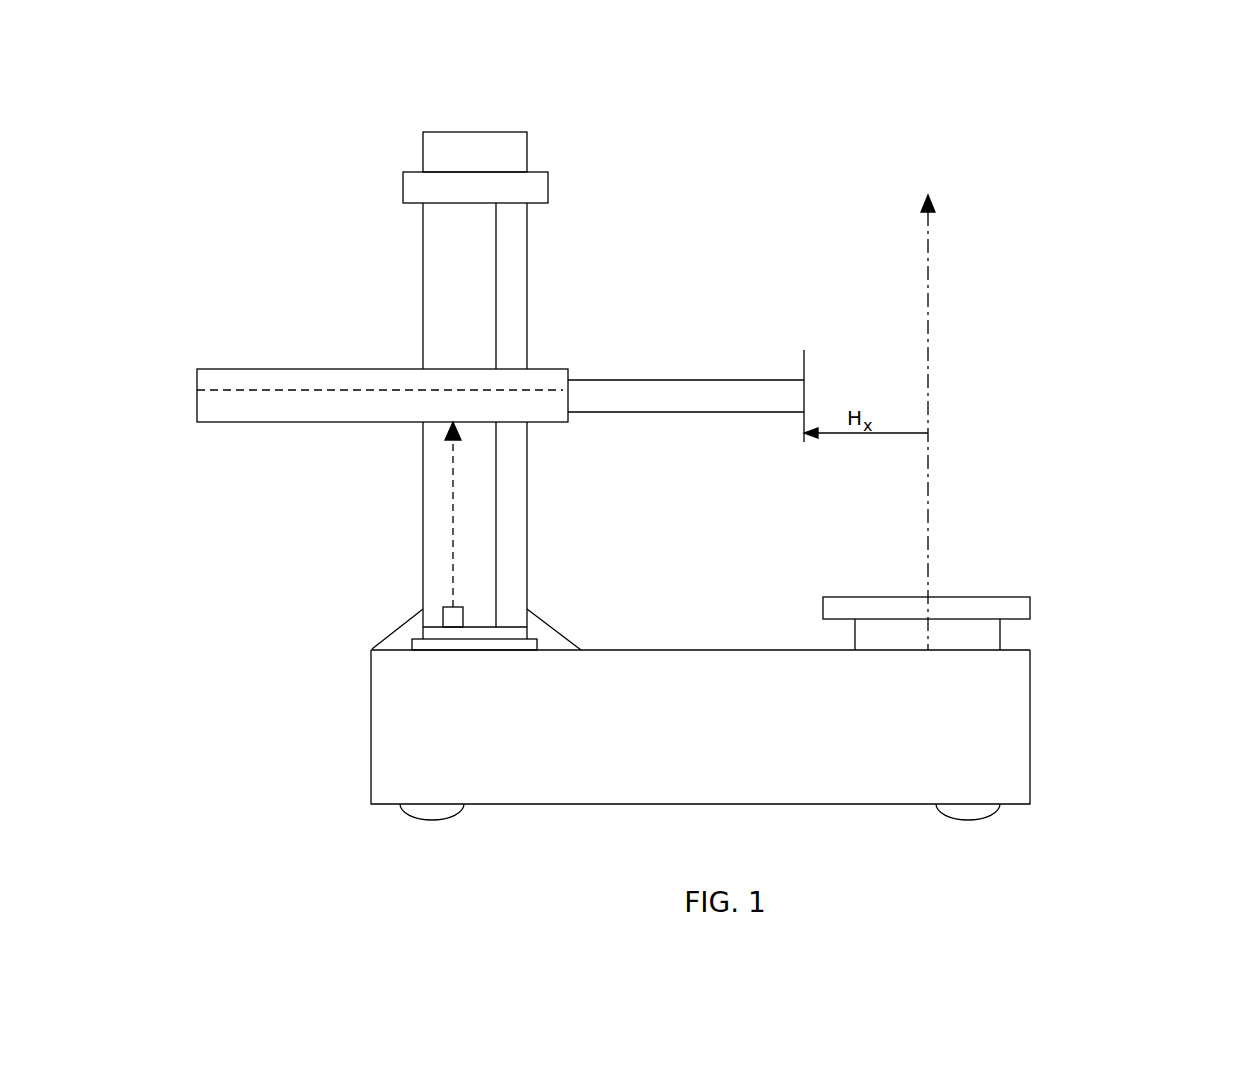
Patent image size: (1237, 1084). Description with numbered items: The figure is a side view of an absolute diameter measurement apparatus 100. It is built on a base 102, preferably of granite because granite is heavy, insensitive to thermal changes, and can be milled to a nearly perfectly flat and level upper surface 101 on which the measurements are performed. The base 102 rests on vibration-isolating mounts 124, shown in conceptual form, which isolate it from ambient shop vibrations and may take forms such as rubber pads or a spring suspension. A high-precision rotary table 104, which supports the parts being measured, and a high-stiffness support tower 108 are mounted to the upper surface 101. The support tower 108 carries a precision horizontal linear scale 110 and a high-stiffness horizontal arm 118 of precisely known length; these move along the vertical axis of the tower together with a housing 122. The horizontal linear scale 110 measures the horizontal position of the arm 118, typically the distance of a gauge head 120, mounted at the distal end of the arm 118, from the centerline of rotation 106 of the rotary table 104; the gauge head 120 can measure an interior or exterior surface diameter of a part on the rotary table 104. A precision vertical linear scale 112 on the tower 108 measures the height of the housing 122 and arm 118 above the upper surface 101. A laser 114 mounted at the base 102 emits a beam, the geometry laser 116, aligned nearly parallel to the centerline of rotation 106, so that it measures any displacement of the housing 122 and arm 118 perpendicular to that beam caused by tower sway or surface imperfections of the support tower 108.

The measurement apparatus 100 is at (1051, 132).
The upper surface 101 is at (650, 649).
The base 102 is at (700, 727).
The high-precision rotary table 104 is at (990, 608).
The centerline of rotation 106 is at (928, 307).
The high-stiffness support tower 108 is at (517, 152).
The precision horizontal linear scale 110 is at (422, 390).
The precision vertical linear scale 112 is at (496, 513).
The laser 114 is at (452, 617).
The geometry laser 116 is at (453, 556).
The high-stiffness horizontal arm 118 is at (712, 390).
The gauge head 120 is at (803, 423).
The housing 122 is at (362, 410).
The vibration-isolating mount 124 is at (968, 825).